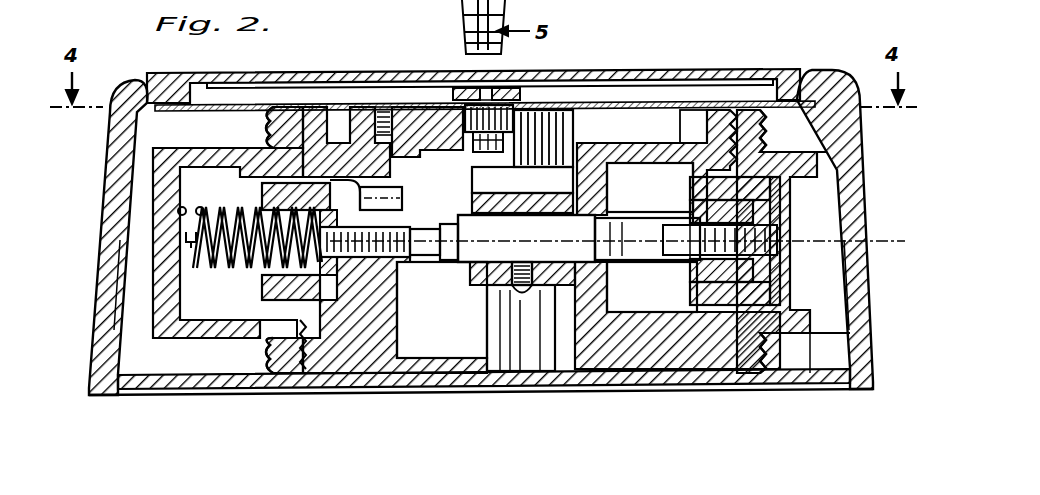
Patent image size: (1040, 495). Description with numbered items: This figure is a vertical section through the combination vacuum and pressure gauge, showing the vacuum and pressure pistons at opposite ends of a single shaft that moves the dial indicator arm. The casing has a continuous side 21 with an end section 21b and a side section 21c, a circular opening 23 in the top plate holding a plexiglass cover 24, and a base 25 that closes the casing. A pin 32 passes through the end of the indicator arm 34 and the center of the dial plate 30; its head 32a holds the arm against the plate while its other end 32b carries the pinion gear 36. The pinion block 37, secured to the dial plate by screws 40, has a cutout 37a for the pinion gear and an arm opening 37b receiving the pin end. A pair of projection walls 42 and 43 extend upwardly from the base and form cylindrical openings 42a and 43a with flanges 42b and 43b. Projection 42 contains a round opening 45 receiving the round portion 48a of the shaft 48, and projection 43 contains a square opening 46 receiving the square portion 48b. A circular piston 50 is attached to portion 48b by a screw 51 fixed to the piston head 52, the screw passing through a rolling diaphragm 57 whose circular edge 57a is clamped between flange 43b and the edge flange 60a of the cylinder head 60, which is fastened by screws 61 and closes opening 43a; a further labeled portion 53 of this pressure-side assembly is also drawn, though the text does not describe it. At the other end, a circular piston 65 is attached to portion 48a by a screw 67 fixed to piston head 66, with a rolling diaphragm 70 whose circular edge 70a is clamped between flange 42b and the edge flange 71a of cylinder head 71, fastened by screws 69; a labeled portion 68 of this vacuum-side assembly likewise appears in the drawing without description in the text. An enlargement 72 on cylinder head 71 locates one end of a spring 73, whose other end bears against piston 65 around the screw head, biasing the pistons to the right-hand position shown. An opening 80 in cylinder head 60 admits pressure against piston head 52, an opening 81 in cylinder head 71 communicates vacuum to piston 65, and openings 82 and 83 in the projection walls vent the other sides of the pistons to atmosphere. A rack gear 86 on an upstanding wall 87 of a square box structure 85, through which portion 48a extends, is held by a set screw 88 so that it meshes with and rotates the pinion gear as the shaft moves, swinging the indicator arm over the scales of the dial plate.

The continuous side 21 is at (106, 136).
The end section 21b is at (858, 325).
The side section 21c is at (100, 286).
The circular opening 23 is at (795, 69).
The plexiglass cover 24 is at (690, 72).
The base 25 is at (143, 397).
The dial plate 30 is at (648, 102).
The pin 32 is at (465, 95).
The head 32a is at (505, 92).
The other end of the indicator pin 32b is at (474, 154).
The indicator arm 34 is at (520, 108).
The pinion gear 36 is at (562, 110).
The pinion block 37 is at (430, 108).
The cutout 37a is at (428, 125).
The arm opening 37b is at (482, 172).
The screws 40 is at (384, 105).
The projection wall 42 is at (335, 143).
The cylindrical opening 42a is at (333, 360).
The flange 42b is at (316, 110).
The projection wall 43 is at (595, 360).
The cylindrical opening 43a is at (622, 340).
The flange 43b is at (720, 110).
The round opening 45 is at (390, 262).
The square opening 46 is at (630, 262).
The piston rod or shaft 48 is at (478, 288).
The round portion 48a is at (516, 295).
The square portion 48b is at (622, 262).
The circular piston 50 is at (755, 275).
The screw 51 is at (782, 222).
The piston head 52 is at (782, 200).
The base portion 53 is at (690, 372).
The rolling diaphragm 57 is at (772, 185).
The circular edge 57a is at (712, 140).
The cylinder head 60 is at (812, 152).
The edge flange 60a is at (770, 372).
The screws 61 is at (768, 128).
The circular piston 65 is at (268, 192).
The piston head 66 is at (372, 340).
The screw 67 is at (268, 288).
The bore 68 is at (433, 262).
The screws 69 is at (270, 112).
The rolling diaphragm 70 is at (268, 148).
The circular edge 70a is at (300, 372).
The cylinder head 71 is at (165, 320).
The edge flange 71a is at (290, 375).
The enlargement 72 is at (178, 212).
The spring 73 is at (207, 280).
The opening 80 is at (615, 238).
The opening 81 is at (186, 240).
The opening 82 is at (402, 199).
The opening 83 is at (605, 208).
The square box structure 85 is at (526, 310).
The rack gear 86 is at (575, 124).
The upstanding wall 87 is at (577, 172).
The set screw 88 is at (515, 300).